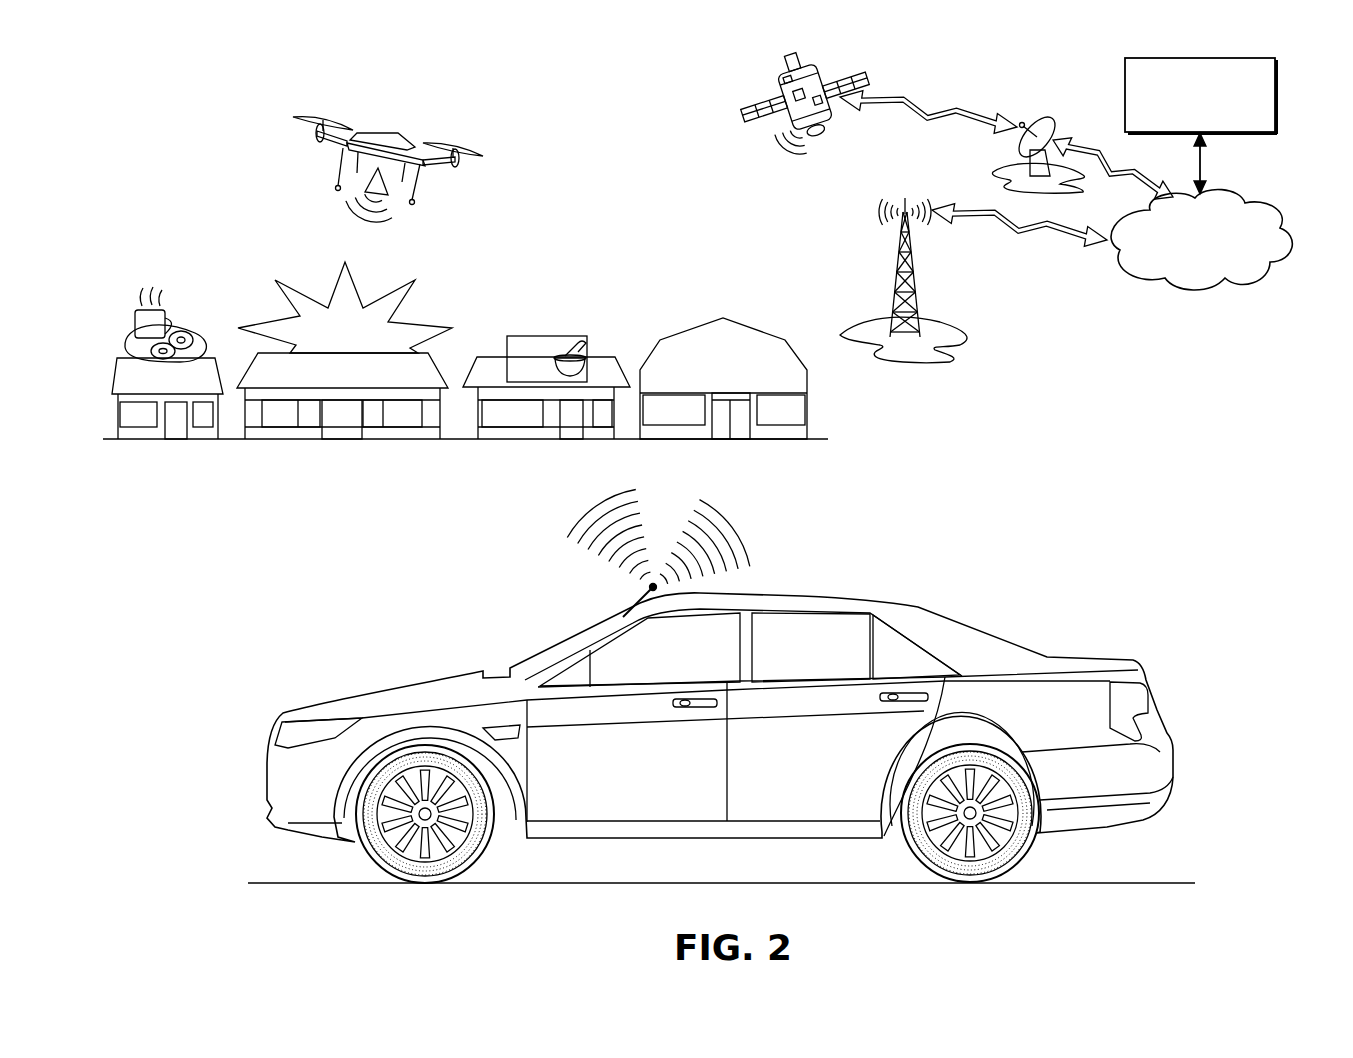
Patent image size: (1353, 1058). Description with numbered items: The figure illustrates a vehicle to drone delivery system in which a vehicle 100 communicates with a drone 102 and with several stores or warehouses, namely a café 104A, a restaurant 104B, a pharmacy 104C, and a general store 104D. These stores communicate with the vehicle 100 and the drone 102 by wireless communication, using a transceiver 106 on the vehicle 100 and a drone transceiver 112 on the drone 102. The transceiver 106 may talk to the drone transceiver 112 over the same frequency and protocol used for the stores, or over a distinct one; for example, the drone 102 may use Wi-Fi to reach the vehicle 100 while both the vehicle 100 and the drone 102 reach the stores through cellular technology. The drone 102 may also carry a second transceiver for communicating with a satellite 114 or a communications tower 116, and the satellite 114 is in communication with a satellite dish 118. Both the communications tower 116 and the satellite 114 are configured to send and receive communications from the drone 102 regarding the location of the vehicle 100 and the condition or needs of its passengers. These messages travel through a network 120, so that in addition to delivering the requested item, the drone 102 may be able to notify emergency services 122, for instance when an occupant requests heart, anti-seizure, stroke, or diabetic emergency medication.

The vehicle 100 is at (822, 592).
The drone 102 is at (380, 133).
The café 104A is at (190, 320).
The restaurant 104B is at (420, 328).
The pharmacy 104C is at (552, 330).
The general store 104D is at (698, 325).
The transceiver 106 is at (645, 590).
The drone transceiver 112 is at (390, 188).
The satellite 114 is at (790, 82).
The communications tower 116 is at (905, 290).
The satellite dish 118 is at (1047, 125).
The network 120 is at (1262, 205).
The emergency services 122 is at (1277, 108).